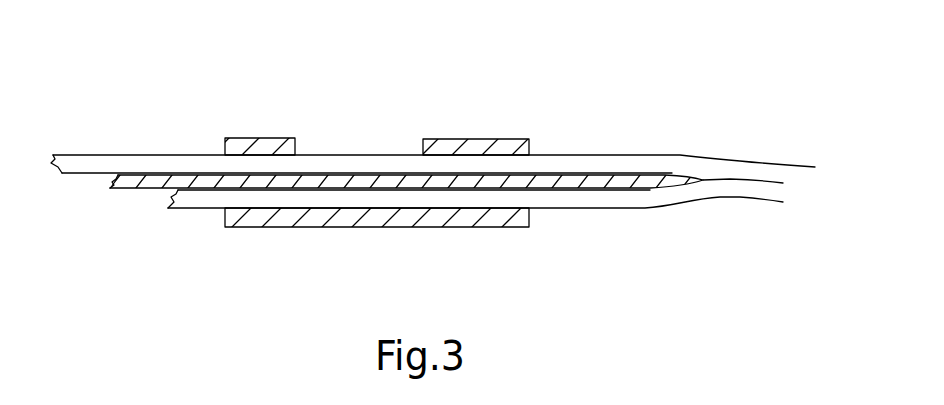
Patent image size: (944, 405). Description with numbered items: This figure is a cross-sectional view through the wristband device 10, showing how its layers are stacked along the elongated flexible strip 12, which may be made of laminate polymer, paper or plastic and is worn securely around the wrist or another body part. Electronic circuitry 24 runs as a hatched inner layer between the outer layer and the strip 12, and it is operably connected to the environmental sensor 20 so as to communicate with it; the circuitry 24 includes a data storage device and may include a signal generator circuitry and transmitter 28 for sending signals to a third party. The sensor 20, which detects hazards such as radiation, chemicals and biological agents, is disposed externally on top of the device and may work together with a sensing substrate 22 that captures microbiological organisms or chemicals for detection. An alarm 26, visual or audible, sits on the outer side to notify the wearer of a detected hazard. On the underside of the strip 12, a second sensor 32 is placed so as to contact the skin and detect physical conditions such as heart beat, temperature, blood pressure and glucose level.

The wristband device 10 is at (740, 85).
The elongated flexible strip 12 is at (643, 208).
The sensor 20 is at (478, 137).
The sensing substrate 22 is at (589, 154).
The electronic circuitry 24 is at (132, 189).
The alarm 26 is at (223, 137).
The signal generator circuitry and transmitter 28 is at (223, 137).
The second sensor 32 is at (513, 227).